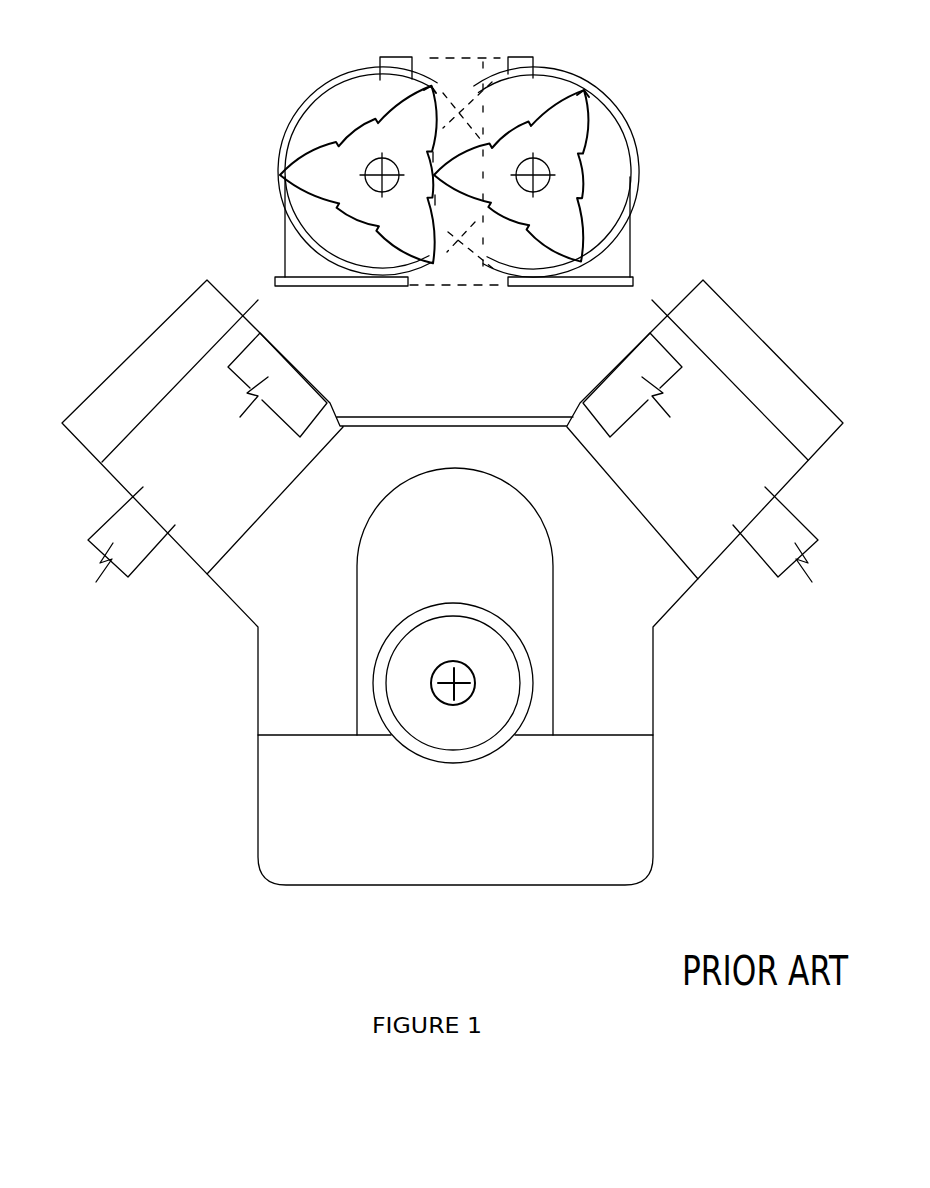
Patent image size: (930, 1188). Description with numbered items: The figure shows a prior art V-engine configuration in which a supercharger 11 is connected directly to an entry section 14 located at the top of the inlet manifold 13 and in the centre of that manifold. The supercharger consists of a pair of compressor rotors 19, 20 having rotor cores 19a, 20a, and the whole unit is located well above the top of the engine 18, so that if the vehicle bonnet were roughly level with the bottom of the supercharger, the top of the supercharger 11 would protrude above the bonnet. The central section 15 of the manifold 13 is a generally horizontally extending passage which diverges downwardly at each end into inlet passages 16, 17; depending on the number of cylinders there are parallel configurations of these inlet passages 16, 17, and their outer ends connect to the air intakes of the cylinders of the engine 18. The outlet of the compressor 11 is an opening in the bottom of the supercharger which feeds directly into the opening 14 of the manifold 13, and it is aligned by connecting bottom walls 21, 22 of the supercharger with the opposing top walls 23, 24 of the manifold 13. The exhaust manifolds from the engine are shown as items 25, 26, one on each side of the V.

The supercharger 11 is at (637, 157).
The inlet manifold 13 is at (250, 287).
The entry section 14 is at (477, 293).
The central section 15 is at (423, 305).
The inlet passage 16 is at (292, 378).
The inlet passage 17 is at (615, 367).
The engine 18 is at (437, 887).
The compressor rotor 19 is at (357, 140).
The rotor core 19a is at (427, 100).
The compressor rotor 20 is at (547, 143).
The rotor core 20a is at (588, 117).
The bottom wall of the supercharger 21 is at (343, 279).
The bottom wall of the supercharger 22 is at (567, 278).
The top wall of the manifold 23 is at (202, 274).
The top wall of the manifold 24 is at (657, 305).
The exhaust manifold 25 is at (112, 570).
The exhaust manifold 26 is at (797, 573).